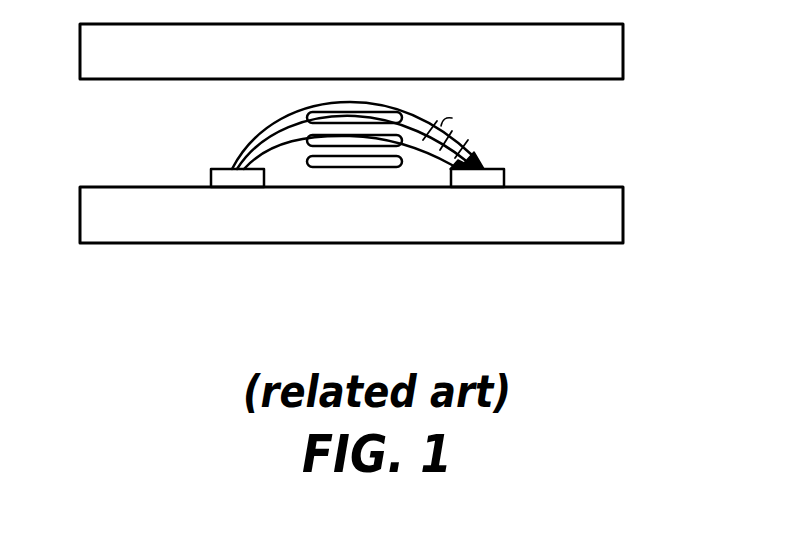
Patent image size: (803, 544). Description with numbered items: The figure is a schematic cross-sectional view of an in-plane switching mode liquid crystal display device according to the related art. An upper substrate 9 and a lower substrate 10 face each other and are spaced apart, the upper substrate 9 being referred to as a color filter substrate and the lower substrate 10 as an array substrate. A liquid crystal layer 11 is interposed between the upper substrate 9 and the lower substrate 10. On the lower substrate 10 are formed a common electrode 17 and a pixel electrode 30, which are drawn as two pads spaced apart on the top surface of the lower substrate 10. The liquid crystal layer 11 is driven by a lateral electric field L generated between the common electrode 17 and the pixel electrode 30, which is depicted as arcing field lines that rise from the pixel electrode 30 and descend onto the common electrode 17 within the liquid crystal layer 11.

The upper substrate 9 is at (650, 22).
The liquid crystal layer 11 is at (650, 79).
The lower substrate 10 is at (650, 184).
The pixel electrode 30 is at (236, 180).
The common electrode 17 is at (487, 178).
The lateral electric field L is at (431, 156).